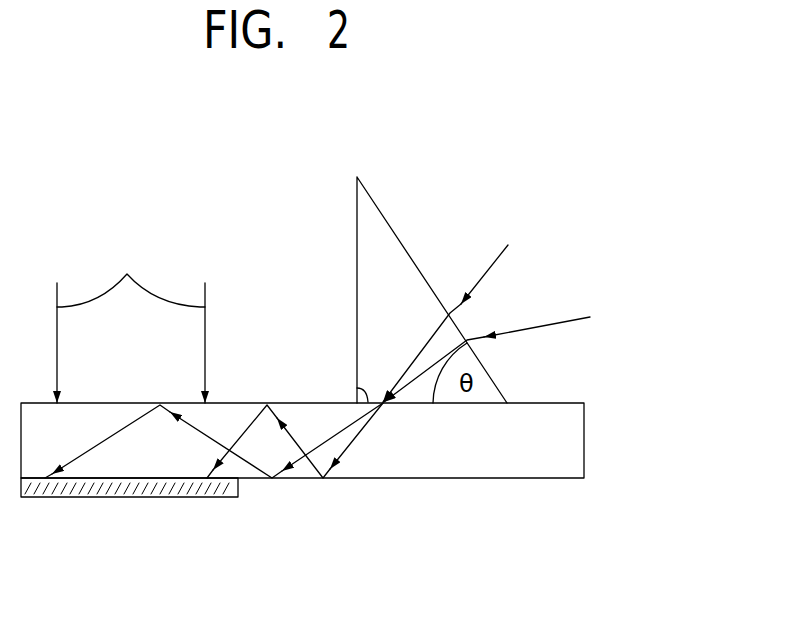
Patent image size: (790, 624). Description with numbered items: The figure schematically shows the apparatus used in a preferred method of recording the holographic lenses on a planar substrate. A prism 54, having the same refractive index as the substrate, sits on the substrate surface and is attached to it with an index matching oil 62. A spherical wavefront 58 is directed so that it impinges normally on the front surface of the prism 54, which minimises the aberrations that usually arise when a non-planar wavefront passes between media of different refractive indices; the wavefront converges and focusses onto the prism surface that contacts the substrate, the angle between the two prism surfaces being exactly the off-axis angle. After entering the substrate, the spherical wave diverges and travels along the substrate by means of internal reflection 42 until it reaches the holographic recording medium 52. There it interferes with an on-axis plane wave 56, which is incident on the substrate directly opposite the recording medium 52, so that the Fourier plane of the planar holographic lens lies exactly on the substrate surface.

The internal reflection 42 is at (333, 434).
The holographic recording medium 52 is at (207, 497).
The prism 54 is at (378, 207).
The on-axis plane wave 56 is at (131, 319).
The spherical wavefront 58 is at (504, 251).
The index matching oil 62 is at (357, 388).